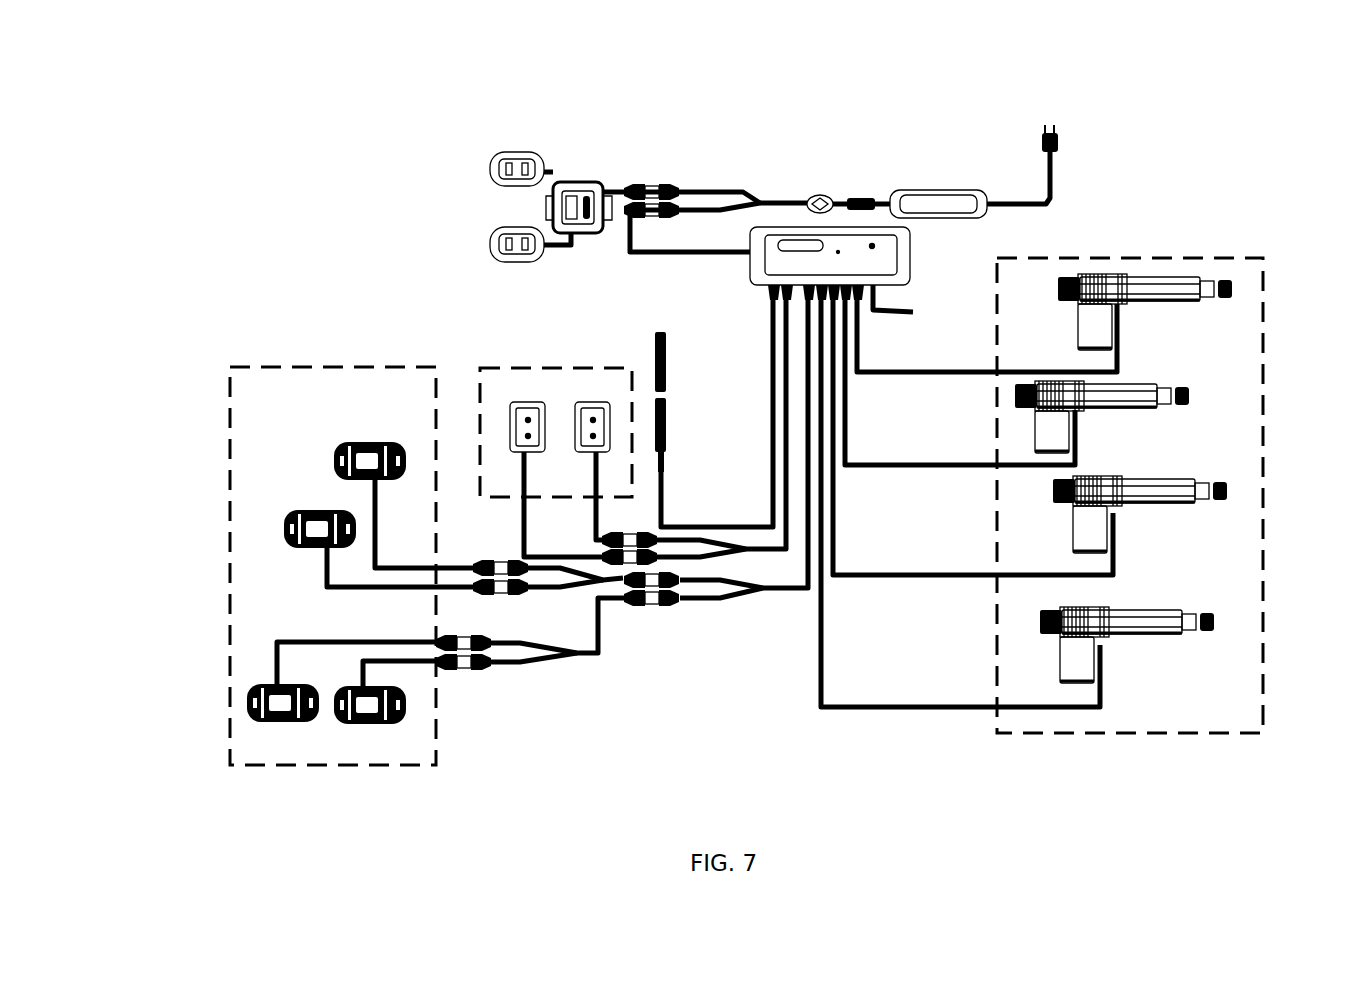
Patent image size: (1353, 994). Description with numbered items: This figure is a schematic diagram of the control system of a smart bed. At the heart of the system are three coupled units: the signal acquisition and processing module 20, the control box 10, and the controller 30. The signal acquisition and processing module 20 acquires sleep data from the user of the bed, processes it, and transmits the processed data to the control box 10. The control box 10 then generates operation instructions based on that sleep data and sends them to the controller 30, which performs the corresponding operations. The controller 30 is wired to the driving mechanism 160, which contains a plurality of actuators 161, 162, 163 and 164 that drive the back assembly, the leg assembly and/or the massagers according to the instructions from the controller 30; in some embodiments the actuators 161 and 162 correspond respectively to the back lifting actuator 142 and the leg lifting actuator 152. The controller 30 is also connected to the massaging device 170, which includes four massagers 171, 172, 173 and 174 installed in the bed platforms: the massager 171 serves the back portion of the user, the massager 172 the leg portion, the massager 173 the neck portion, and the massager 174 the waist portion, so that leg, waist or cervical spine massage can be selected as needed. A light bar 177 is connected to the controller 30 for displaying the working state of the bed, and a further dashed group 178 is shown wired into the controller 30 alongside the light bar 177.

The control box 10 is at (575, 186).
The signal acquisition and processing module 20 is at (500, 240).
The controller 30 is at (850, 252).
The driving mechanism 160 is at (1172, 257).
The back lifting actuator 142 is at (1205, 319).
The actuator 161 is at (1167, 298).
The leg lifting actuator 152 is at (1184, 425).
The actuator 162 is at (1150, 403).
The actuator 163 is at (1165, 505).
The actuator 164 is at (1165, 625).
The massaging device 170 is at (302, 367).
The massager 171 is at (352, 445).
The massager 172 is at (322, 517).
The massager 173 is at (268, 692).
The massager 174 is at (370, 713).
The light bar 177 is at (661, 455).
The remote control group 178 is at (555, 367).